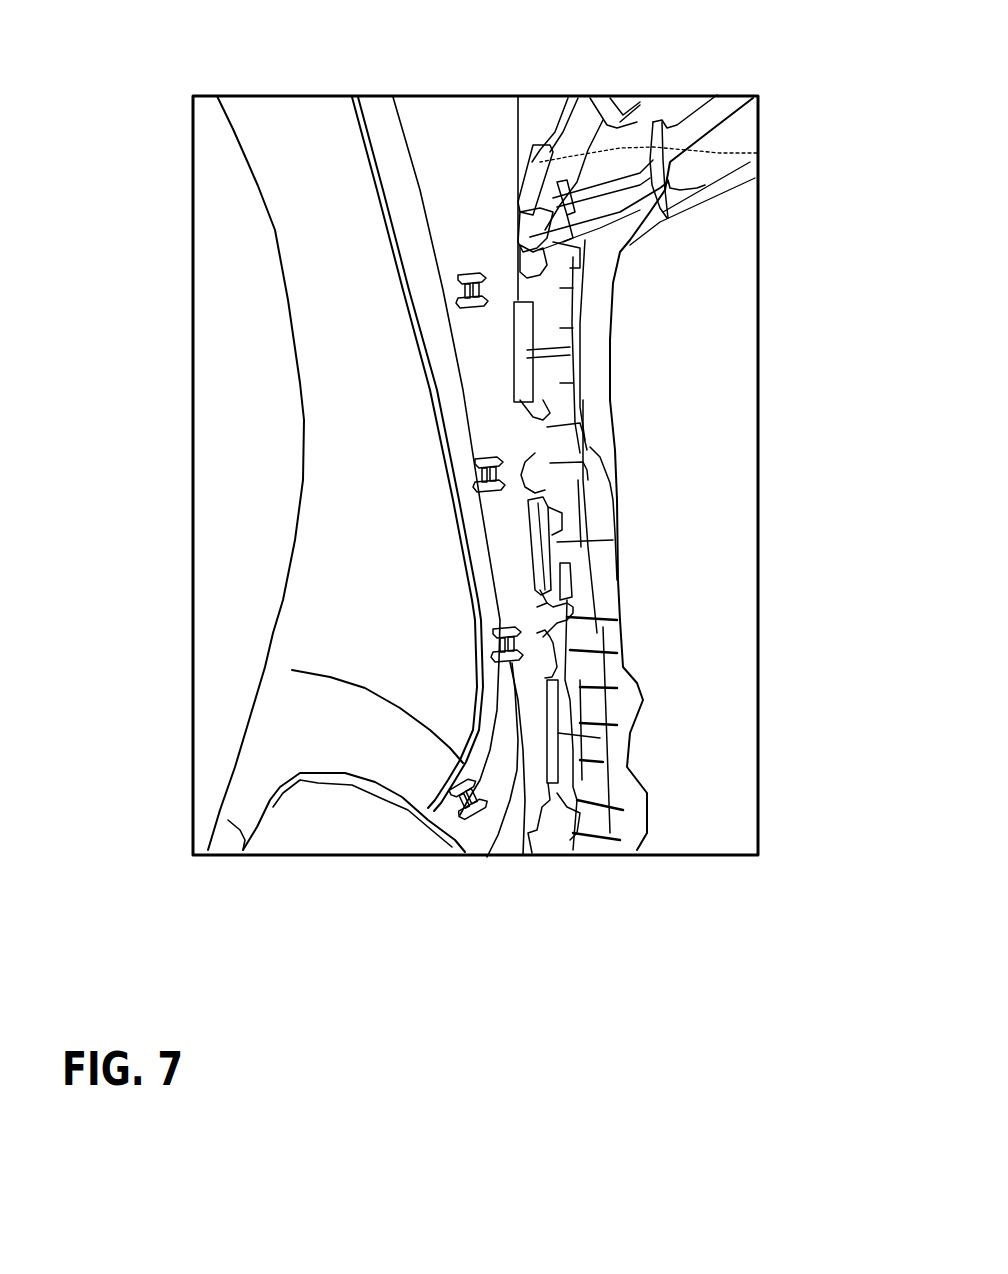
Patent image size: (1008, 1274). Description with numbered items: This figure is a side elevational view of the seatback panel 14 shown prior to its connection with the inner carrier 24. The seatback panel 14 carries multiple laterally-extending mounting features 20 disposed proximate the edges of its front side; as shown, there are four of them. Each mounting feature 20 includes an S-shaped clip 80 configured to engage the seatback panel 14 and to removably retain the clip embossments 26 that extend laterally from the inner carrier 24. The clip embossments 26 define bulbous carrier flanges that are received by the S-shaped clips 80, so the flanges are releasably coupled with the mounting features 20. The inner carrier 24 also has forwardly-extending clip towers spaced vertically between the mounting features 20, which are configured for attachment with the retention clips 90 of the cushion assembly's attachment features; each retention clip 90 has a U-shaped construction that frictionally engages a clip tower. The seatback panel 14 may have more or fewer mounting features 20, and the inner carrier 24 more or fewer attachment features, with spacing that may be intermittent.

The seatback panel 14 is at (272, 474).
The mounting features 20 is at (298, 456).
The inner carrier 24 is at (669, 477).
The clip embossments 26 is at (673, 514).
The S-shaped clip 80 is at (641, 484).
The retention clip 90 is at (688, 419).